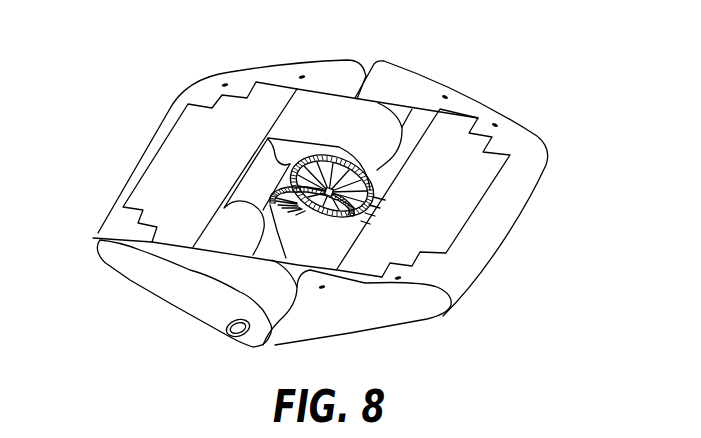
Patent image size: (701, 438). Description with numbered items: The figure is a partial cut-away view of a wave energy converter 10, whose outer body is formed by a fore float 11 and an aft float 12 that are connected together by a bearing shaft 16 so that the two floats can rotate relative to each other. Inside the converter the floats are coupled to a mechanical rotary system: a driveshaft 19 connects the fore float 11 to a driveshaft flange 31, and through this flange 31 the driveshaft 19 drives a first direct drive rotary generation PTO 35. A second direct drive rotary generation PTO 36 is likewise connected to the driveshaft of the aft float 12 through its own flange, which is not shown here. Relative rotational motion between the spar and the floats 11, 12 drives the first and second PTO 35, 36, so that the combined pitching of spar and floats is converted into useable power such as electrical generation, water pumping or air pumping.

The wave energy converter 10 is at (497, 69).
The fore float 11 is at (105, 243).
The aft float 12 is at (532, 145).
The bearing shaft 16 is at (230, 337).
The driveshaft 19 is at (265, 140).
The driveshaft flange 31 is at (355, 157).
The first direct drive rotary generation PTO 35 is at (382, 203).
The second direct drive rotary generation PTO 36 is at (365, 228).